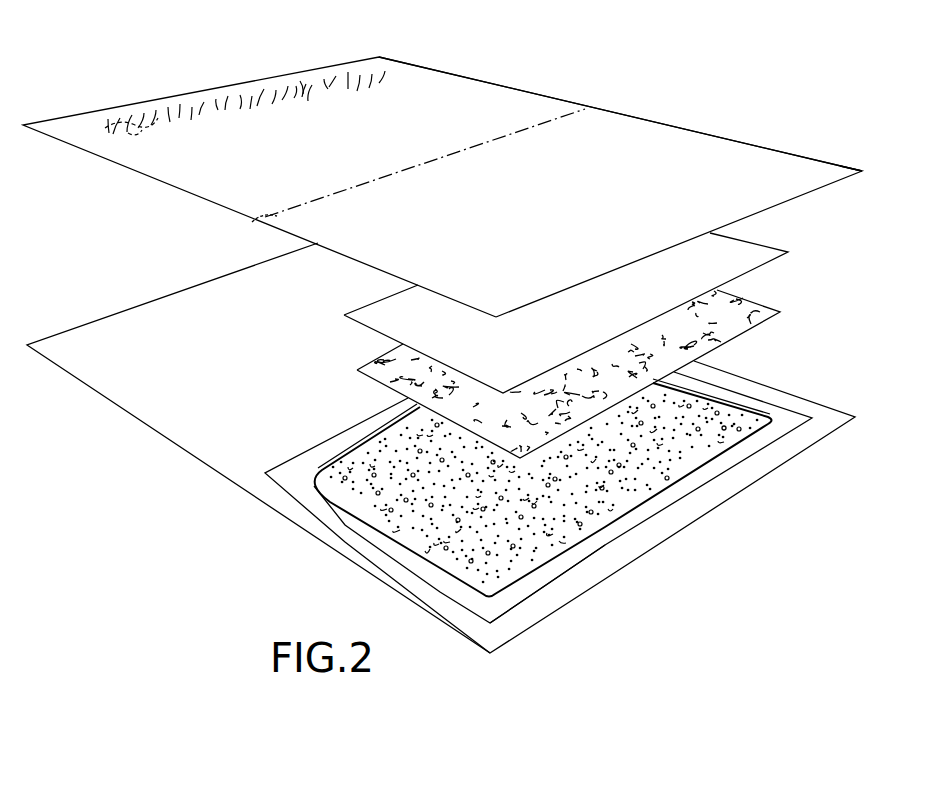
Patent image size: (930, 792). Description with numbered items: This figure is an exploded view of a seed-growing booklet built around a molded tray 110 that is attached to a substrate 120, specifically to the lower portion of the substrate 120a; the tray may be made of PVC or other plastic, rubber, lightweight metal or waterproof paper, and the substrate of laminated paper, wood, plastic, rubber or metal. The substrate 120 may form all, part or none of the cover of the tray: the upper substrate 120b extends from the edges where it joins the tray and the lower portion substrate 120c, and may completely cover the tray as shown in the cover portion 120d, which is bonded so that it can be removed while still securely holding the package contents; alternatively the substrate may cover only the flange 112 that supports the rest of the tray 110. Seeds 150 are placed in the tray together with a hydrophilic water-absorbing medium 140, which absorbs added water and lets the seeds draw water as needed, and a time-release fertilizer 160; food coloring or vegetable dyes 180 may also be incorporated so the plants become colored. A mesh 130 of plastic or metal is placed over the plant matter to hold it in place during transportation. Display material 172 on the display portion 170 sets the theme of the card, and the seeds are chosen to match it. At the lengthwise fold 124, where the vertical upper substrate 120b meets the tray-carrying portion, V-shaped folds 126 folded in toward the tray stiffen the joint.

The molded tray 110 is at (742, 452).
The flange 112 is at (527, 593).
The substrate 120 is at (789, 125).
The substrate portion attached to tray 120a is at (689, 521).
The upper substrate 120b is at (493, 97).
The lower portion substrate 120c is at (138, 392).
The cover portion of the substrate 120d is at (588, 170).
The lengthwise fold in the substrate 124 is at (540, 122).
The V-shaped folds 126 is at (262, 219).
The mesh 130 is at (763, 249).
The water-absorbing medium 140 is at (750, 312).
The seeds 150 is at (693, 415).
The time-release fertilizer 160 is at (726, 427).
The display portion 170 is at (178, 113).
The display material 172 is at (303, 84).
The food coloring or vegetable dyes 180 is at (737, 442).